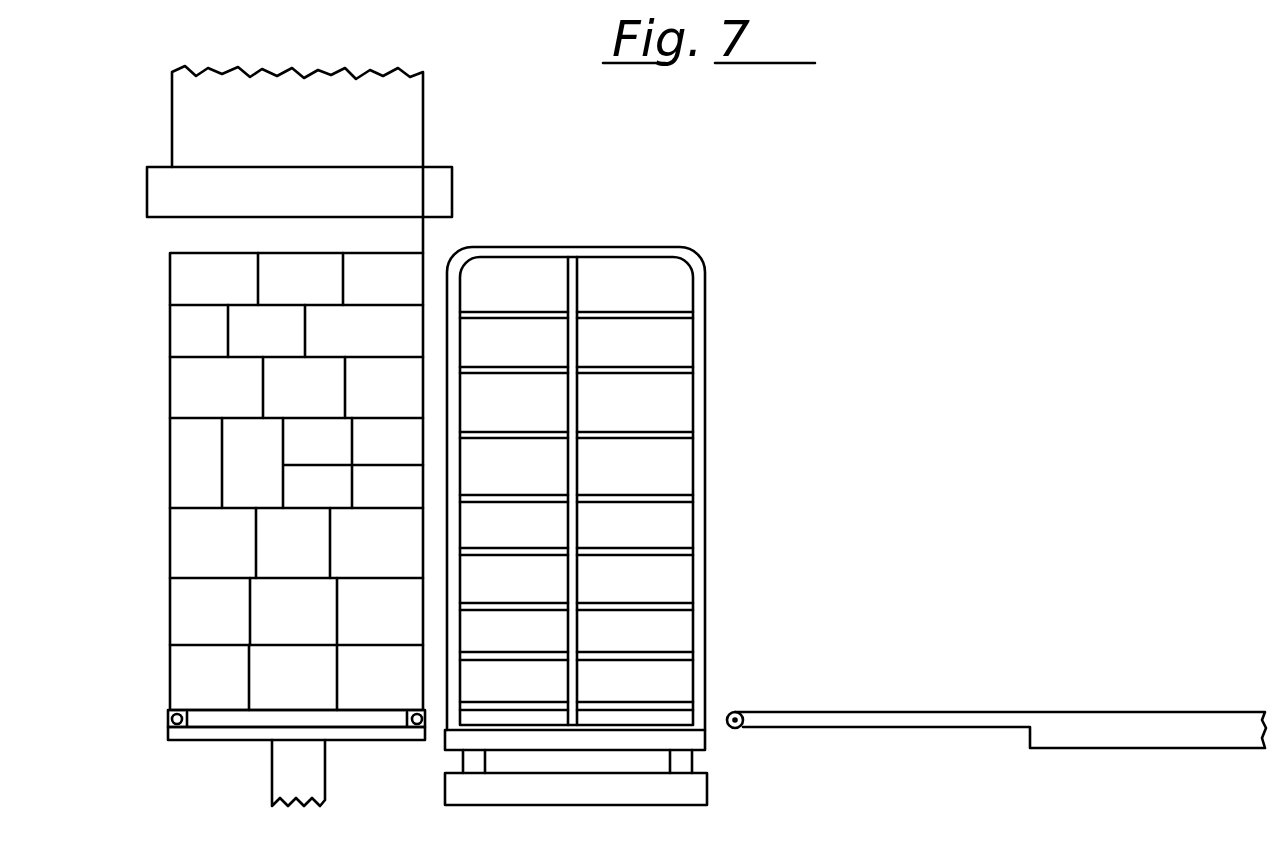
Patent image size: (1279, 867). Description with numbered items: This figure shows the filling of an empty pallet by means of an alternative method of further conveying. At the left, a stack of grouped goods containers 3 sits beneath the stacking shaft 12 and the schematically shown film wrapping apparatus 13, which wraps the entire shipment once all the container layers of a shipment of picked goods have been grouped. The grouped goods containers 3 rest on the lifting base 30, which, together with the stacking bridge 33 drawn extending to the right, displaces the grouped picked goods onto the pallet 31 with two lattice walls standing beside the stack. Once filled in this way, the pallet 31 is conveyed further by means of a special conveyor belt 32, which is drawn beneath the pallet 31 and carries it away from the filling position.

The goods containers 3 is at (195, 444).
The stacking shaft 12 is at (423, 107).
The film wrapping apparatus 13 is at (435, 187).
The lifting base 30 is at (250, 720).
The pallet with two lattice walls 31 is at (705, 510).
The special conveyor belt 32 is at (687, 787).
The stacking bridge 33 is at (1077, 712).